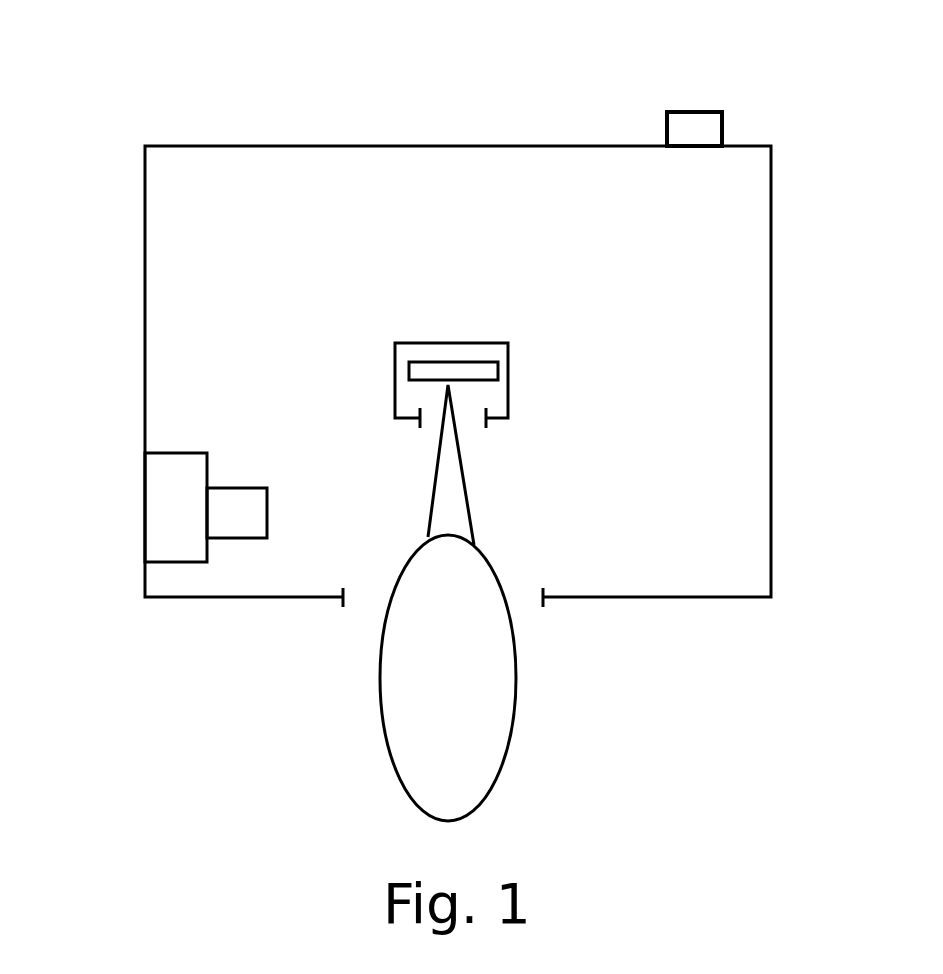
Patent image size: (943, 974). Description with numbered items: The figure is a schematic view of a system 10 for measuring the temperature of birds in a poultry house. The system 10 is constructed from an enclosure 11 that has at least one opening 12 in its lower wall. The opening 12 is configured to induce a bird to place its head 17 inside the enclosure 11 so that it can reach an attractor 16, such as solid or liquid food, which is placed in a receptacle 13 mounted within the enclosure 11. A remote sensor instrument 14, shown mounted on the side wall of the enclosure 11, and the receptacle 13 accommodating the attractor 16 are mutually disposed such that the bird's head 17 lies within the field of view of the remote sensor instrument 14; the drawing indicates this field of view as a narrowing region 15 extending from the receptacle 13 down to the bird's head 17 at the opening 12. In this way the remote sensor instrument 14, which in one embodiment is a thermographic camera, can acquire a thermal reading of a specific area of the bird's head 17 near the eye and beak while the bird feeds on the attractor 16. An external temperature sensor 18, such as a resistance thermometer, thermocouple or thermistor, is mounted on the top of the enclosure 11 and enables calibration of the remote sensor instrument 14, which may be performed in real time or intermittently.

The system 10 is at (86, 133).
The enclosure 11 is at (310, 146).
The opening 12 is at (522, 597).
The receptacle 13 is at (510, 388).
The remote sensor instrument 14 is at (165, 522).
The light beam 15 is at (437, 420).
The attractor 16 is at (437, 370).
The bird's head 17 is at (515, 708).
The external temperature sensor 18 is at (704, 123).